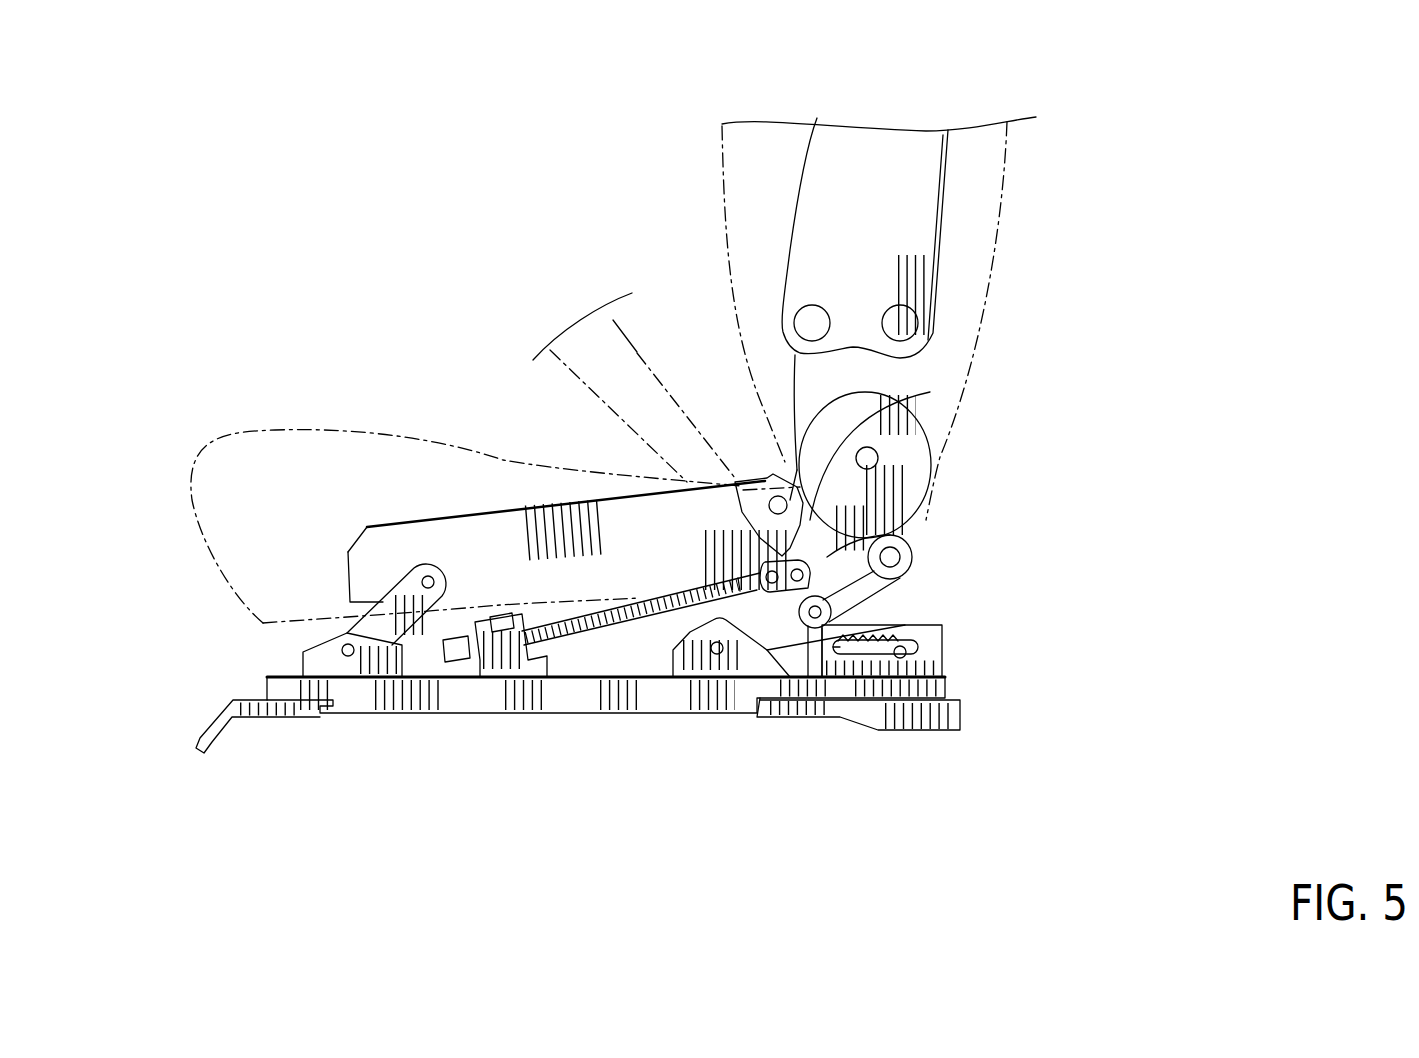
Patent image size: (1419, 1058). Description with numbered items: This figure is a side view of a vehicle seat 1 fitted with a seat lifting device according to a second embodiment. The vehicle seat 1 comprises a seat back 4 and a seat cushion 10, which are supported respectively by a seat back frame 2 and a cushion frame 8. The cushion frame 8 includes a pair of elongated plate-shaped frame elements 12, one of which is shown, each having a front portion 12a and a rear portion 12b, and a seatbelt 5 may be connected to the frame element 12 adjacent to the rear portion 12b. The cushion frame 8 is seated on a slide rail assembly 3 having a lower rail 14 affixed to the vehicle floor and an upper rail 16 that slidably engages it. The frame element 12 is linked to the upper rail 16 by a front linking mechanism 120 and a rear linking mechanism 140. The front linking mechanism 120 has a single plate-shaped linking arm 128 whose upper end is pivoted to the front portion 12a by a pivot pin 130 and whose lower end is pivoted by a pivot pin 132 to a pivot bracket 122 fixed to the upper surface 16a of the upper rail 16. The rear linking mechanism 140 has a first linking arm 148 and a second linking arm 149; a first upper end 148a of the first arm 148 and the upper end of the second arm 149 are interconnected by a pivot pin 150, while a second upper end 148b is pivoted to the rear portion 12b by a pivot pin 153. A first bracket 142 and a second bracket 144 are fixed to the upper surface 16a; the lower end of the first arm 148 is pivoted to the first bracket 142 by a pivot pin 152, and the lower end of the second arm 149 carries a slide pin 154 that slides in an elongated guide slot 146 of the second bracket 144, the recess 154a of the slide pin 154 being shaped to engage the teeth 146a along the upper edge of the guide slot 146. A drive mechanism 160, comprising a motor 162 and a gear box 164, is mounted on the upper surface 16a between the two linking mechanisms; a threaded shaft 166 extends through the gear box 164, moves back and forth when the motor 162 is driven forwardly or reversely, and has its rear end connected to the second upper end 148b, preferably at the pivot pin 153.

The vehicle seat 1 is at (627, 232).
The seat back frame 2 is at (944, 197).
The slide rail assembly 3 is at (988, 713).
The seat back 4 is at (1000, 232).
The seatbelt 5 is at (640, 345).
The cushion frame 8 is at (568, 504).
The seat cushion 10 is at (318, 445).
The frame element 12 is at (528, 505).
The front portion of frame element 12a is at (363, 553).
The rear portion of frame element 12b is at (823, 537).
The lower rail 14 is at (441, 700).
The upper rail 16 is at (942, 692).
The upper surface of upper rail 16a is at (412, 690).
The front linking mechanism 120 is at (327, 600).
The pivot bracket 122 is at (300, 653).
The linking arm 128 is at (388, 572).
The pivot pin 130 is at (430, 582).
The pivot pin 132 is at (352, 680).
The rear linking mechanism 140 is at (925, 603).
The first bracket 142 is at (688, 640).
The second bracket 144 is at (935, 643).
The guide slot 146 is at (841, 720).
The teeth 146a is at (847, 675).
The first linking arm 148 is at (769, 720).
The first upper end 148a is at (811, 678).
The second upper end 148b is at (803, 447).
The second linking arm 149 is at (822, 596).
The pivot pin 150 is at (905, 535).
The pivot pin 152 is at (705, 702).
The pivot pin 153 is at (770, 568).
The slide pin 154 is at (903, 665).
The recess 154a is at (850, 638).
The drive mechanism 160 is at (566, 644).
The motor 162 is at (503, 618).
The gear box 164 is at (507, 714).
The threaded shaft 166 is at (612, 604).